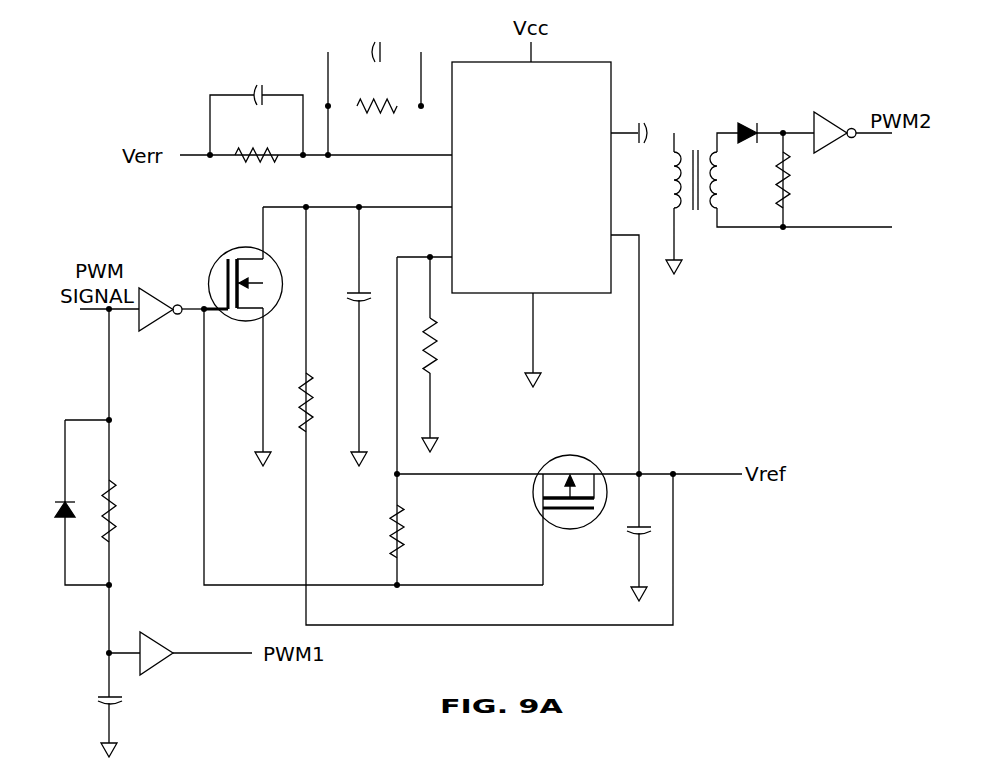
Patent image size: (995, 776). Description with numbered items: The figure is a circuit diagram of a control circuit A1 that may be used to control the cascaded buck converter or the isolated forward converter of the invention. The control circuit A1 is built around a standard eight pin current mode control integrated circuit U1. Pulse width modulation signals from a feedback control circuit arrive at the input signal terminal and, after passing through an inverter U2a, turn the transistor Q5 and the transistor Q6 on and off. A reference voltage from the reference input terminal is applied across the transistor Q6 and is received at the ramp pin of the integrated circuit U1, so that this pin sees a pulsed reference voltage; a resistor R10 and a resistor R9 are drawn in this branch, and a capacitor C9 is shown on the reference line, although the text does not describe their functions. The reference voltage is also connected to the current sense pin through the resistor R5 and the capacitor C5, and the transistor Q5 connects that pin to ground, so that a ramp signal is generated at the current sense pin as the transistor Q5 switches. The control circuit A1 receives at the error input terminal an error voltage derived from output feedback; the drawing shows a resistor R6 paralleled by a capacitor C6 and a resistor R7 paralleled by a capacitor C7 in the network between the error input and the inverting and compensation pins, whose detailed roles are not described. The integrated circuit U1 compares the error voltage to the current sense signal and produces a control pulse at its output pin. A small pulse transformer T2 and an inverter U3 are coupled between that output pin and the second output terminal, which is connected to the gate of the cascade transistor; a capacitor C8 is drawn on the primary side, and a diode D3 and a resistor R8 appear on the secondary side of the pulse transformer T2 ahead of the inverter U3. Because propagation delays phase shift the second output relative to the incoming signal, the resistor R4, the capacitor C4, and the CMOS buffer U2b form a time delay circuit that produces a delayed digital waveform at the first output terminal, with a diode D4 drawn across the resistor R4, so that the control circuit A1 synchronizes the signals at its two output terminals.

The control circuit A1 is at (720, 68).
The capacitor C6 is at (255, 77).
The resistor R6 is at (256, 140).
The capacitor C7 is at (375, 35).
The resistor R7 is at (377, 89).
The current mode control integrated circuit U1 is at (531, 177).
The capacitor C8 is at (640, 117).
The pulse transformer T2 is at (669, 180).
The diode D3 is at (747, 117).
The resistor R8 is at (803, 180).
The inverter U3 is at (835, 118).
The inverter U2a is at (171, 301).
The transistor Q5 is at (243, 273).
The capacitor C5 is at (338, 298).
The resistor R5 is at (324, 402).
The resistor R10 is at (453, 345).
The resistor R9 is at (421, 531).
The transistor Q6 is at (567, 507).
The capacitor C9 is at (624, 546).
The diode D4 is at (76, 495).
The resistor R4 is at (128, 511).
The CMOS buffer U2b is at (172, 644).
The capacitor C4 is at (94, 700).